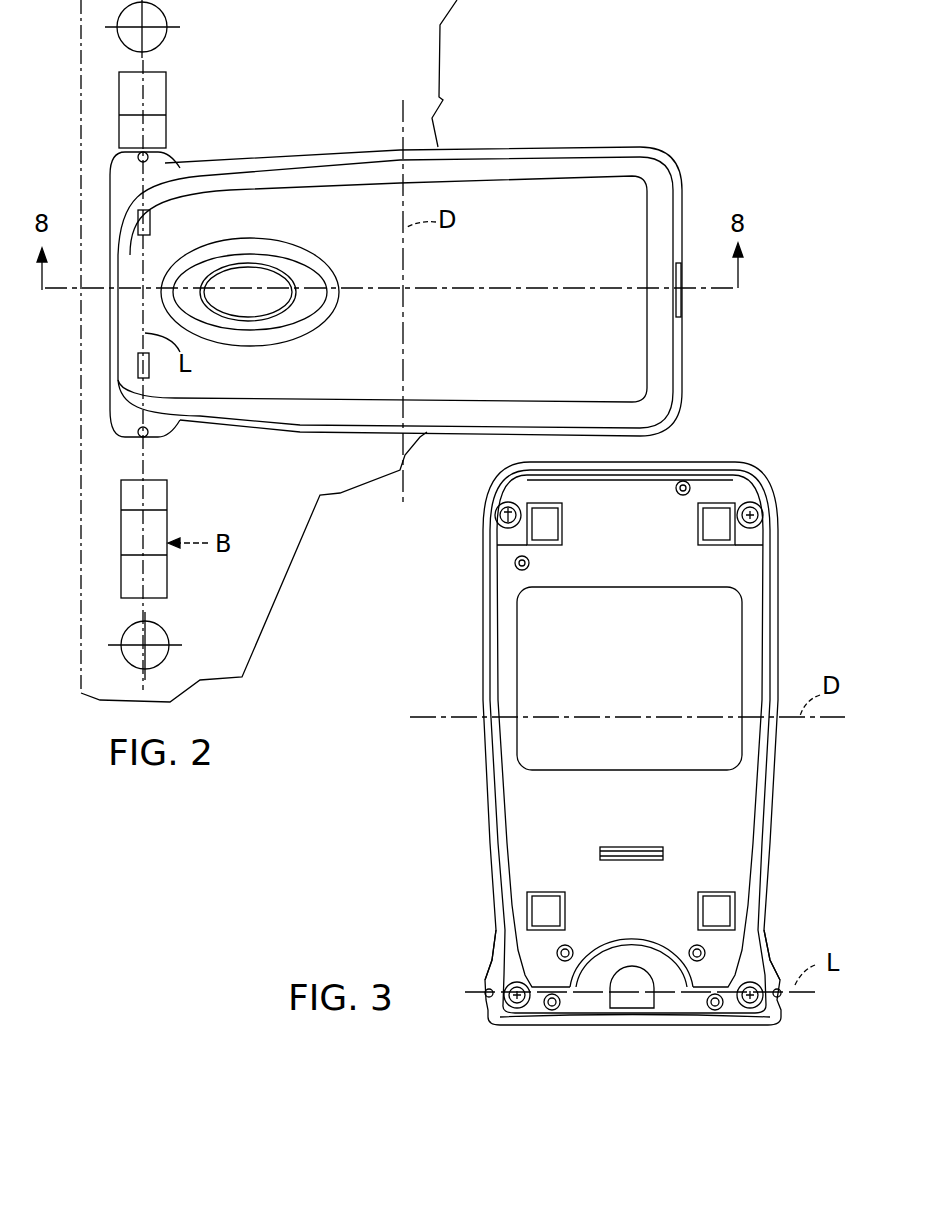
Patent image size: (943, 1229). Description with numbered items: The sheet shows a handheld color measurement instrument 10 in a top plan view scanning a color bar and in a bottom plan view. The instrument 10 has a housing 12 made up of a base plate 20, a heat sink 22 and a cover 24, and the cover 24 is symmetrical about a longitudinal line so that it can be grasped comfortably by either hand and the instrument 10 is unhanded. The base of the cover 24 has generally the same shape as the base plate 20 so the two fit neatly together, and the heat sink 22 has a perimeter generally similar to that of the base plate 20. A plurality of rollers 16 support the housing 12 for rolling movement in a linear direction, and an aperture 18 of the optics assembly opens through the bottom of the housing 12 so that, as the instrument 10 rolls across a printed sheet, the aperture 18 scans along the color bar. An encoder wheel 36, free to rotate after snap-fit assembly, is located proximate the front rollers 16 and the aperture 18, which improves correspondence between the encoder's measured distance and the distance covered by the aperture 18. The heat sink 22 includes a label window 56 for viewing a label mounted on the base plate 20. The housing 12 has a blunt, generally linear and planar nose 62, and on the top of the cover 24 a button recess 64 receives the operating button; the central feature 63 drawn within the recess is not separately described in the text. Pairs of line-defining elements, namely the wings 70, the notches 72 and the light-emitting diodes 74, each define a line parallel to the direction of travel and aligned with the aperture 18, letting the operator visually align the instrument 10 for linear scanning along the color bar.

In FIG. 2, the handheld color measurement instrument 10 is at (604, 122).
In FIG. 3, the handheld color measurement instrument 10 is at (822, 492).
In FIG. 2, the housing 12 is at (686, 187).
In FIG. 3, the housing 12 is at (780, 632).
In FIG. 3, the rollers 16 is at (718, 513).
In FIG. 3, the aperture 18 is at (632, 996).
In FIG. 3, the base plate 20 is at (762, 530).
In FIG. 3, the heat sink 22 is at (700, 821).
In FIG. 2, the cover 24 is at (544, 314).
In FIG. 3, the encoder wheel 36 is at (622, 846).
In FIG. 3, the label aperture or window 56 is at (535, 655).
In FIG. 2, the blunt nose 62 is at (107, 288).
In FIG. 3, the blunt nose 62 is at (565, 1026).
In FIG. 2, the lens 63 is at (266, 314).
In FIG. 2, the button recess 64 is at (305, 260).
In FIG. 2, the wings 70 is at (165, 160).
In FIG. 3, the wings 70 is at (497, 972).
In FIG. 2, the notches 72 is at (146, 152).
In FIG. 3, the notches 72 is at (486, 998).
In FIG. 2, the light-emitting diodes 74 is at (150, 222).